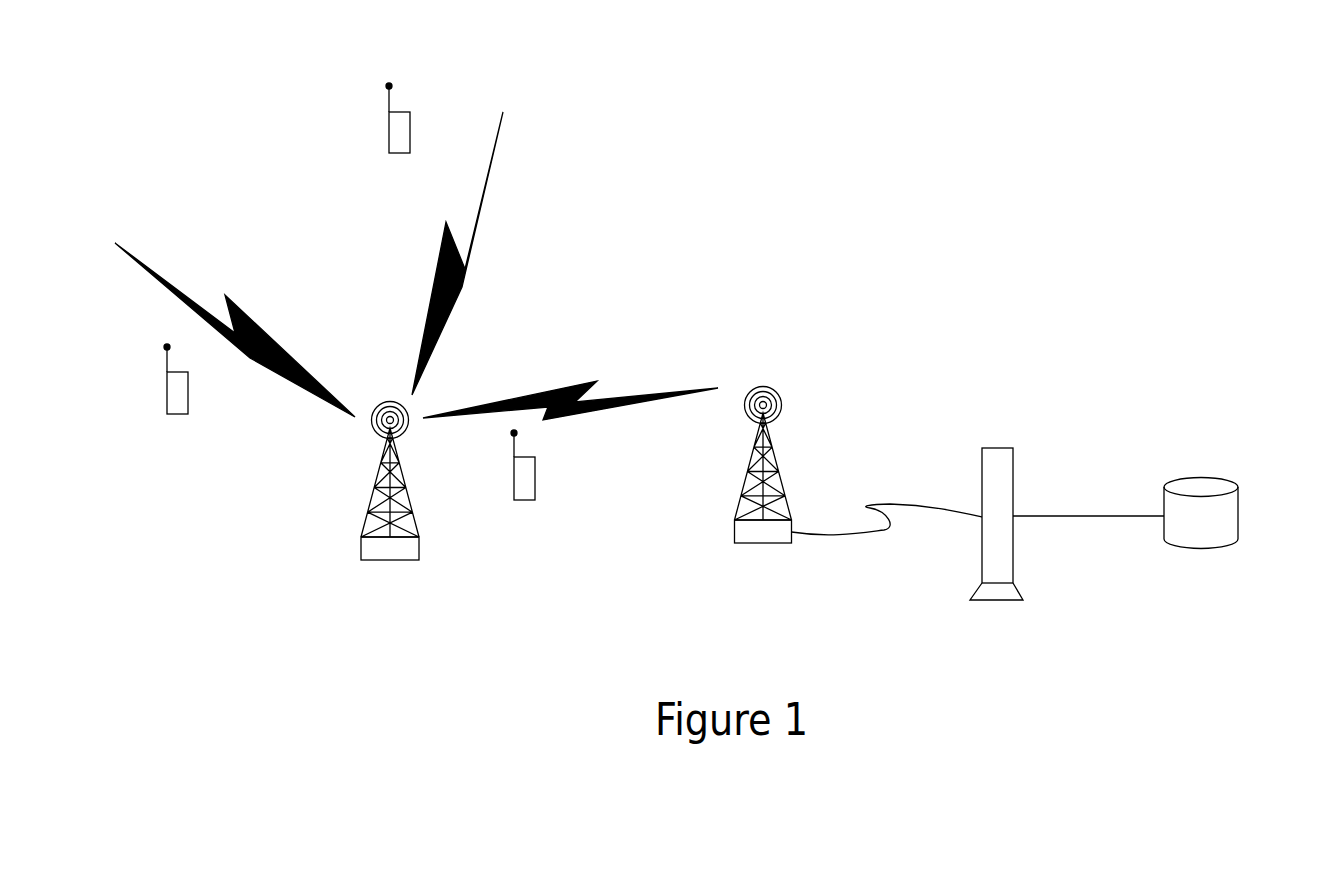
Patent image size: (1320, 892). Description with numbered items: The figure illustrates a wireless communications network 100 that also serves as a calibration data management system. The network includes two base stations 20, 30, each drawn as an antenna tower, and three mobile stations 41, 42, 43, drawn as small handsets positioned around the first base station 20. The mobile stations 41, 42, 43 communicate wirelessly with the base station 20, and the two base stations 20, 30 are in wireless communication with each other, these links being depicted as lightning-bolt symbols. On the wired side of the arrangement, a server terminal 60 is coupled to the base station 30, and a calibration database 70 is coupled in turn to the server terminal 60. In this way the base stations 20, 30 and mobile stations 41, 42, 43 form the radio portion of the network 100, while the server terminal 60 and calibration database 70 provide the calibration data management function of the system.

The wireless communications network 100 is at (1044, 113).
The base station 20 is at (390, 496).
The base station 30 is at (763, 483).
The mobile station 41 is at (180, 396).
The mobile station 42 is at (402, 136).
The mobile station 43 is at (527, 484).
The server terminal 60 is at (1013, 564).
The calibration database 70 is at (1238, 513).